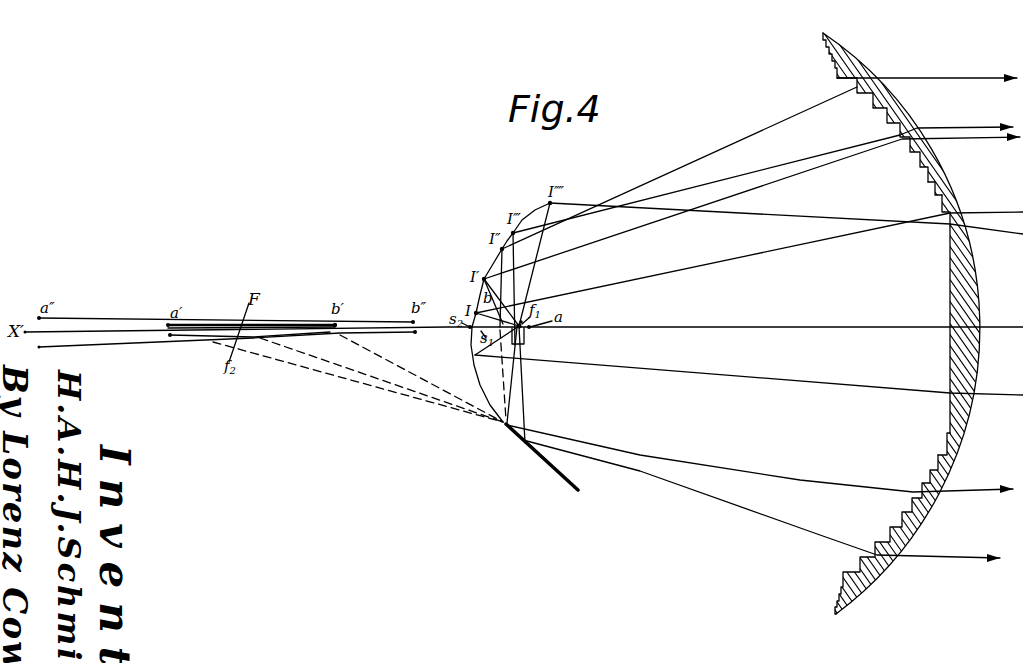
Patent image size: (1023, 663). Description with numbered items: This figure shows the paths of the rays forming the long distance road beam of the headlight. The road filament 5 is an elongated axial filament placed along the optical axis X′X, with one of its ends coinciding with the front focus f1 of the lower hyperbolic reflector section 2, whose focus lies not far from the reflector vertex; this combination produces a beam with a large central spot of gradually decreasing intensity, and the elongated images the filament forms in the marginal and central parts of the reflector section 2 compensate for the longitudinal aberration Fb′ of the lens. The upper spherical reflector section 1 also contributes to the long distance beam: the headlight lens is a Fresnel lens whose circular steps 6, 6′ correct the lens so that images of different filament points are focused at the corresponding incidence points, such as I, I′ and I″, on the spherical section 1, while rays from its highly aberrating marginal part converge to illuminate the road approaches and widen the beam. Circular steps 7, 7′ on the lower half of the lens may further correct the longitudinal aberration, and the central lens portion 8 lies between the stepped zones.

The upper spherical reflector section 1 is at (498, 249).
The lower hyperbolic reflector section 2 is at (472, 366).
The road filament 5 is at (525, 341).
The circular step of the Fresnel lens 6 is at (950, 214).
The circular step of the Fresnel lens 6′ is at (942, 197).
The circular step on the lower half of the lens 7 is at (955, 439).
The circular step on the lower half of the lens 7′ is at (948, 460).
The central lens 8 is at (970, 317).